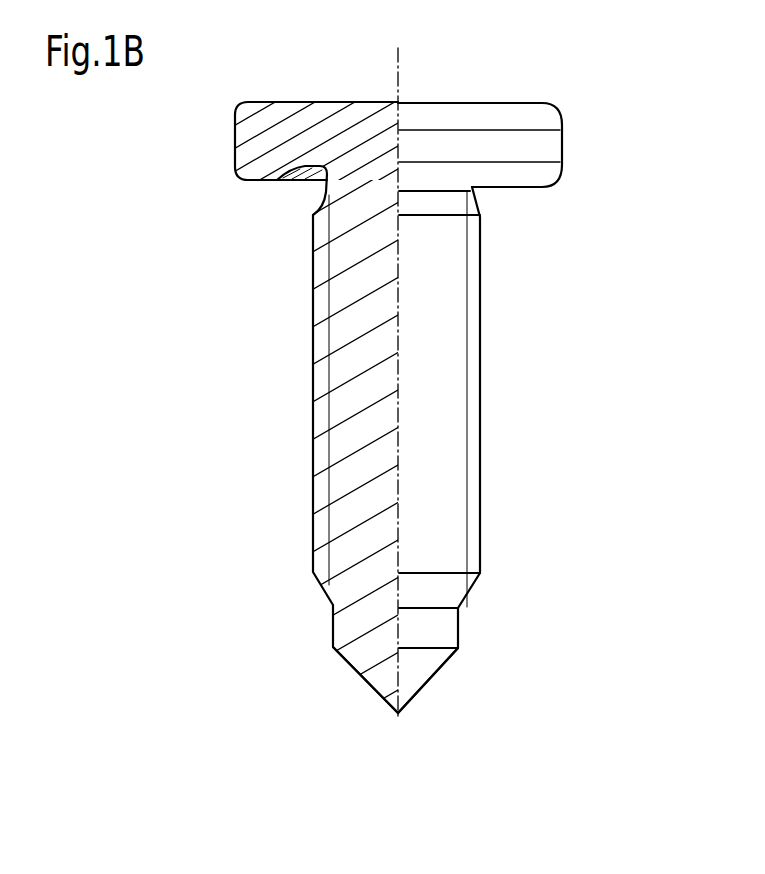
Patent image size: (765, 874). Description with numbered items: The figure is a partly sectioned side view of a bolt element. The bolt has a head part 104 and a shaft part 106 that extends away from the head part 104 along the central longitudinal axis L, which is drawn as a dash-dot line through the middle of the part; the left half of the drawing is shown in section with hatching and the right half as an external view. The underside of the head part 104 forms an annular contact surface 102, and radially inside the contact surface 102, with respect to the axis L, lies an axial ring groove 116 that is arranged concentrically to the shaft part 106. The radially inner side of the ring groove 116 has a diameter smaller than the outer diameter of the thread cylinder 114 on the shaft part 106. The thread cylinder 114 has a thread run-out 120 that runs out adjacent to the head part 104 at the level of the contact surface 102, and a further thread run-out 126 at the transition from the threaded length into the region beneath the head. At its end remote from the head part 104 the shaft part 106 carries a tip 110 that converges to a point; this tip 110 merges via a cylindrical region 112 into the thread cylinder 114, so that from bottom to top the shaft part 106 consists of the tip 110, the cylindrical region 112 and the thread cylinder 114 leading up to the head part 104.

The annular contact surface 102 is at (245, 180).
The head part 104 is at (458, 143).
The shaft part 106 is at (532, 403).
The tip 110 is at (408, 675).
The cylindrical region 112 is at (445, 630).
The thread cylinder 114 is at (450, 308).
The axial ring groove 116 is at (292, 182).
The thread run-out 120 is at (275, 167).
The thread run-out 126 is at (304, 223).
The central longitudinal axis L is at (399, 78).